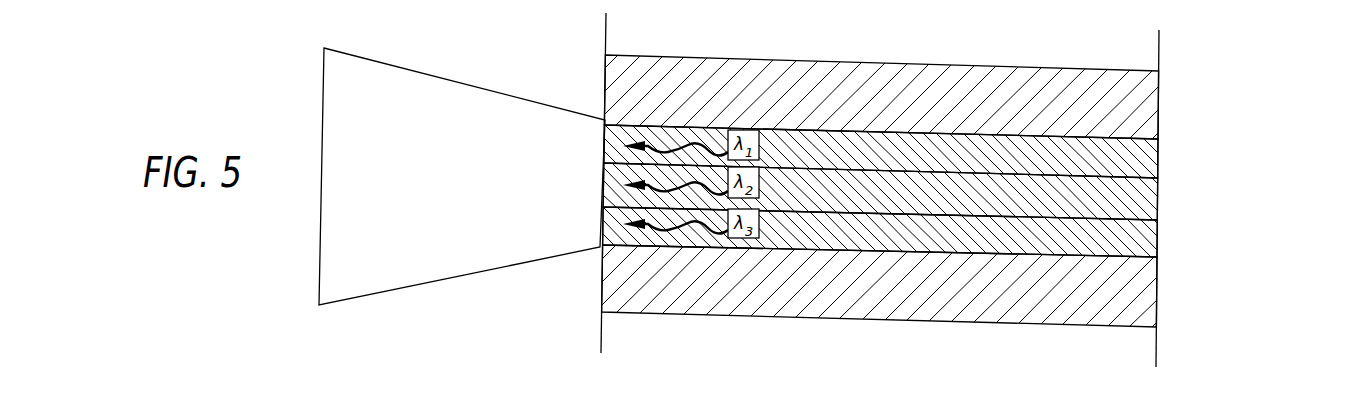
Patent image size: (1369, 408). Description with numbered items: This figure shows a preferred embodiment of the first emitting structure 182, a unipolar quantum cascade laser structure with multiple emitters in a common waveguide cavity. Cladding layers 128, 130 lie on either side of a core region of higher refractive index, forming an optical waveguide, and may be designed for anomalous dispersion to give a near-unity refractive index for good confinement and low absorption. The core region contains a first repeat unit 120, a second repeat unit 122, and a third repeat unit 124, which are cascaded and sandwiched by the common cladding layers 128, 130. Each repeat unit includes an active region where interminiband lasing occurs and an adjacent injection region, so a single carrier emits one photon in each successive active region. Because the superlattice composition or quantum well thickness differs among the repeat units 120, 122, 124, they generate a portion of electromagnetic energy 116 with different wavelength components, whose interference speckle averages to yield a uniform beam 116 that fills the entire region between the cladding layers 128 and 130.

The portion of electromagnetic energy 116 is at (402, 185).
The cladding layer 128 is at (845, 62).
The first repeat unit 120 is at (1160, 157).
The second repeat unit 122 is at (1160, 197).
The third repeat unit 124 is at (1160, 237).
The cladding layer 130 is at (763, 295).
The first emitting structure 182 is at (1252, 78).